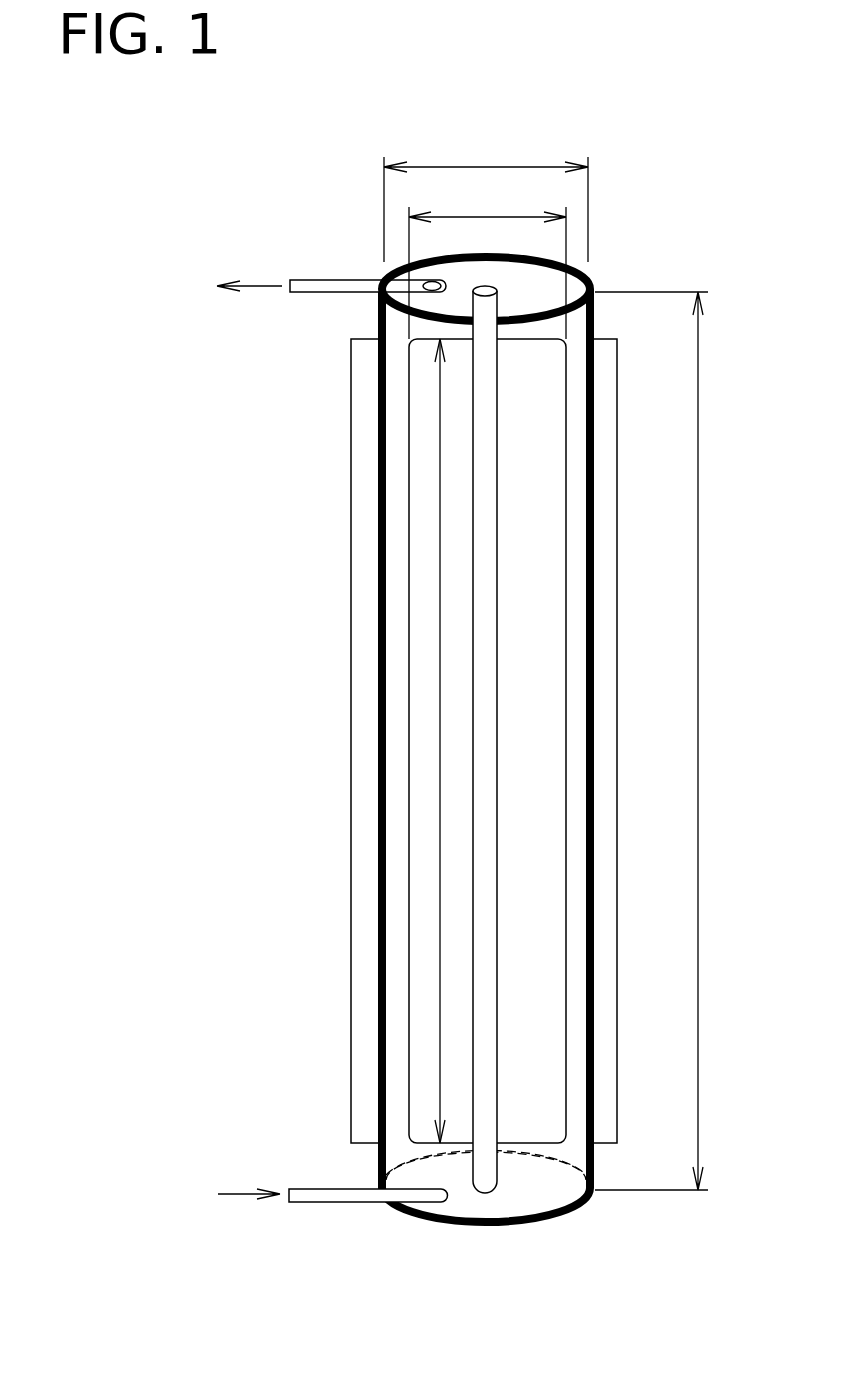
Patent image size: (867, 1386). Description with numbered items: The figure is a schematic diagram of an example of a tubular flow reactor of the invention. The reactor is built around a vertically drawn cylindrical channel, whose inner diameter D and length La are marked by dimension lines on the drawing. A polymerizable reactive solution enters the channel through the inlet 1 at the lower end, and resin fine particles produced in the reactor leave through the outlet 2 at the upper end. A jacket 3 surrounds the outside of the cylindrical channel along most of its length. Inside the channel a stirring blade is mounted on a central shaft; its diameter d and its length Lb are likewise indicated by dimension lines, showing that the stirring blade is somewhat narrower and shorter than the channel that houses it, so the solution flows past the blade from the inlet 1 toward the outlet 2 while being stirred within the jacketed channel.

The inlet 1 is at (338, 1202).
The outlet 2 is at (335, 280).
The jacket 3 is at (351, 742).
The inner diameter of cylindrical channel D is at (486, 192).
The diameter of stirring blade d is at (487, 257).
The length of cylindrical channel La is at (675, 741).
The length of stirring blade Lb is at (440, 842).